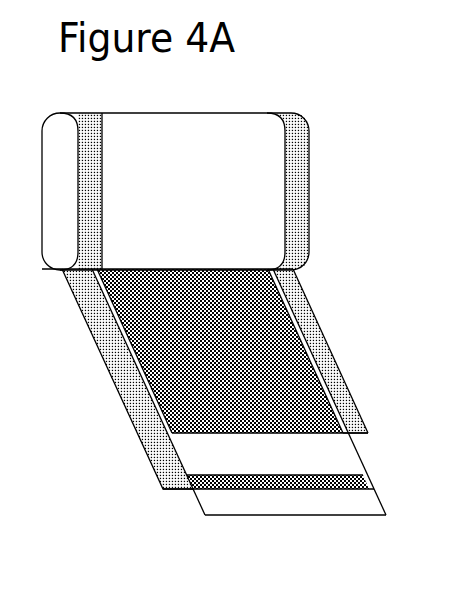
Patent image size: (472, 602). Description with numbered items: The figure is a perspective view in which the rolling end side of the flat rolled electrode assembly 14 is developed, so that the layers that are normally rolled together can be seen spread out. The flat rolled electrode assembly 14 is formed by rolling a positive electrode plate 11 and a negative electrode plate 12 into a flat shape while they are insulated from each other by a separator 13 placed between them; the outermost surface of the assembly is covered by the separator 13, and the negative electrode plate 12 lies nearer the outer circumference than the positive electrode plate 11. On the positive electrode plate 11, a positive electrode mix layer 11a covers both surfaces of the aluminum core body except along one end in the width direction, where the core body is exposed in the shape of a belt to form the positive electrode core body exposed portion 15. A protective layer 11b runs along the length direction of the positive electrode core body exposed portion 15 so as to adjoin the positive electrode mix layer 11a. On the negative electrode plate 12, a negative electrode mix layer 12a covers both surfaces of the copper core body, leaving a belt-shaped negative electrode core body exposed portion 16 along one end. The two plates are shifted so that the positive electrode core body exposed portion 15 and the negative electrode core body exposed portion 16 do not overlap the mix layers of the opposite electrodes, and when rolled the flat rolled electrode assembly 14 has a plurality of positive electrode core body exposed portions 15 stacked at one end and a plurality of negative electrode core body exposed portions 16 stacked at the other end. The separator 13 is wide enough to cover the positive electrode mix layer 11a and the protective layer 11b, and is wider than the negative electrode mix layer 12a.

The positive electrode plate 11 is at (255, 293).
The positive electrode mix layer 11a is at (262, 332).
The protective layer 11b is at (315, 367).
The negative electrode plate 12 is at (98, 313).
The negative electrode mix layer 12a is at (208, 482).
The separator 13 is at (130, 152).
The flat rolled electrode assembly 14 is at (310, 167).
The positive electrode core body exposed portion 15 is at (300, 220).
The negative electrode core body exposed portion 16 is at (92, 190).